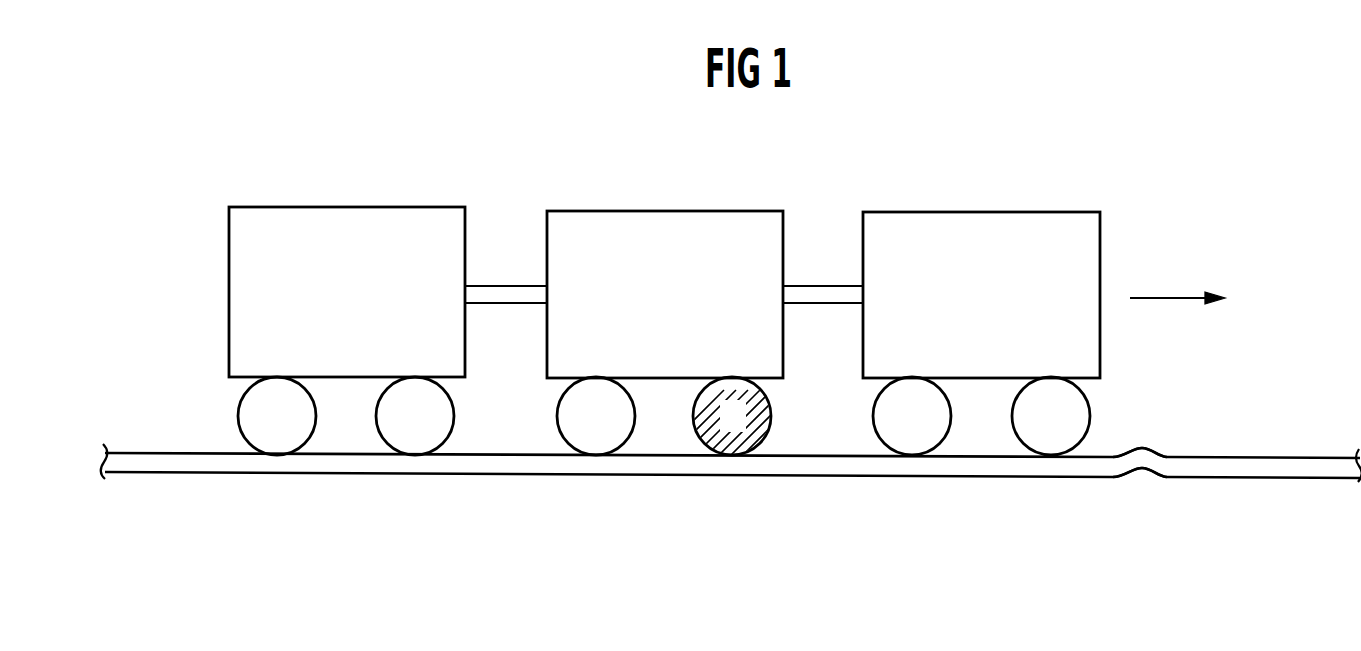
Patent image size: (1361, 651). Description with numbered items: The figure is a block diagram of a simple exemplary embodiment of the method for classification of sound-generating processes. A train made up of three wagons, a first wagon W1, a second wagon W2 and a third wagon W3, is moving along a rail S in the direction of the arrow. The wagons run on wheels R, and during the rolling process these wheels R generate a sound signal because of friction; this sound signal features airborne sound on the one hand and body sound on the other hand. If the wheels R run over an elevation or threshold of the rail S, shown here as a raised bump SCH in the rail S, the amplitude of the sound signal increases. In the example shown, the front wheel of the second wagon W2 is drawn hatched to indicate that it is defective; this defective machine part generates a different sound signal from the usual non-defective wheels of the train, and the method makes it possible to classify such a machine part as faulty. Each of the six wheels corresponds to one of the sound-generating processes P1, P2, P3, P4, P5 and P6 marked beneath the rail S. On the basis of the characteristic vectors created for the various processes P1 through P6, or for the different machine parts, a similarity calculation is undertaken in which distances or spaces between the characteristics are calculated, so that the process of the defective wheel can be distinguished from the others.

The wagon W1 is at (981, 295).
The second wagon W2 is at (665, 294).
The wagon W3 is at (347, 292).
The wheel R is at (664, 423).
The rail S is at (1264, 468).
The rail defect / damage location SCH is at (1142, 492).
The process P1 is at (1049, 514).
The process P2 is at (913, 514).
The process P3 is at (732, 514).
The process P4 is at (595, 514).
The process P5 is at (415, 514).
The process P6 is at (277, 514).